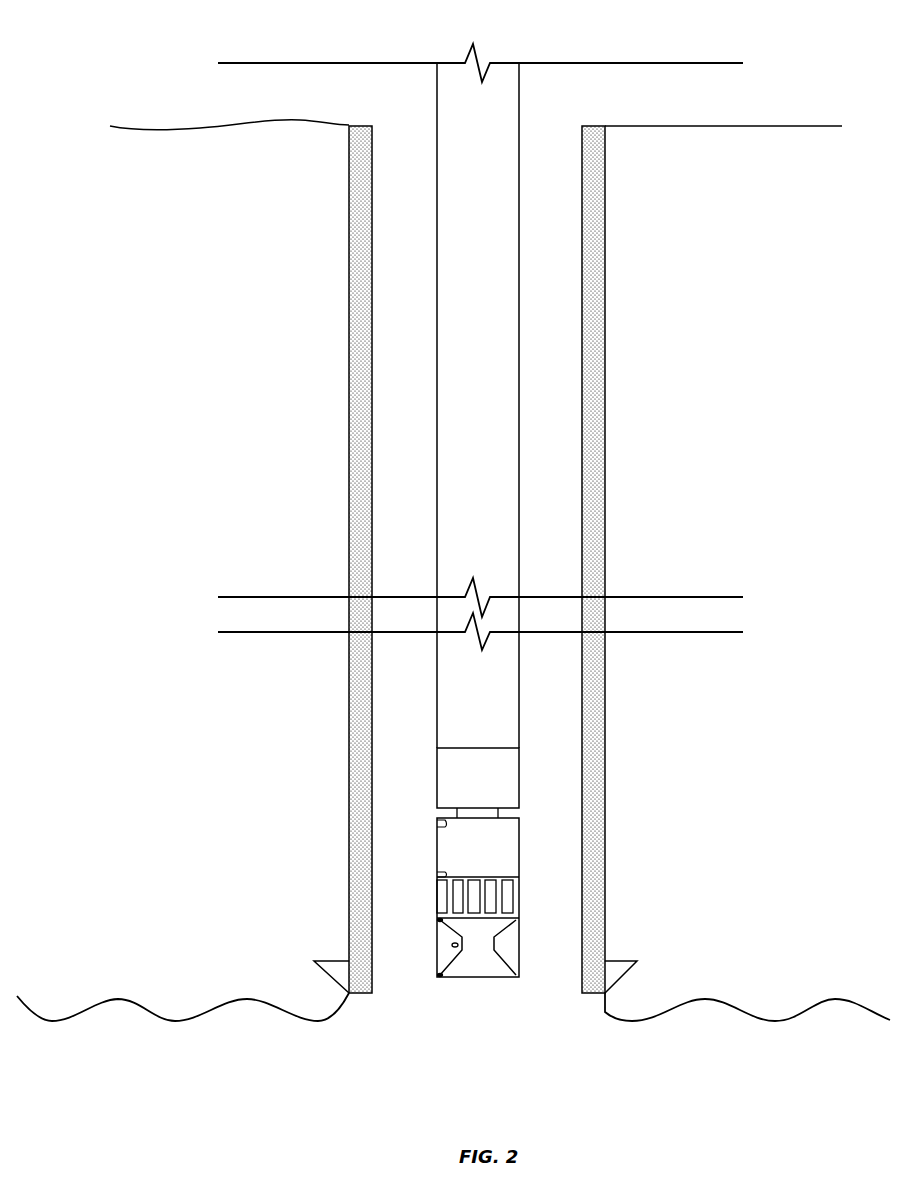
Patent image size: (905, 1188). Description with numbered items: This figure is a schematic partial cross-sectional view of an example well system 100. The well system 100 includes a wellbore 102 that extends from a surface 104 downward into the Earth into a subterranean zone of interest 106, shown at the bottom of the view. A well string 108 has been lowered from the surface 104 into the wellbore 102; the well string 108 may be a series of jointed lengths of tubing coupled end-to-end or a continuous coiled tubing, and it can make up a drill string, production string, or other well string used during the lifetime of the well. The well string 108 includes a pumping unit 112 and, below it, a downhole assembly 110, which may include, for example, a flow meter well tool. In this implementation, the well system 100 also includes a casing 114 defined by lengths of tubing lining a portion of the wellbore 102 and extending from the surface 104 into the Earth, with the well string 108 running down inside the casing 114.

The well system 100 is at (177, 78).
The wellbore 102 is at (553, 252).
The surface 104 is at (746, 126).
The subterranean zone of interest 106 is at (768, 1058).
The well string 108 is at (521, 525).
The downhole assembly 110 is at (536, 882).
The pumping unit 112 is at (533, 772).
The casing 114 is at (606, 189).